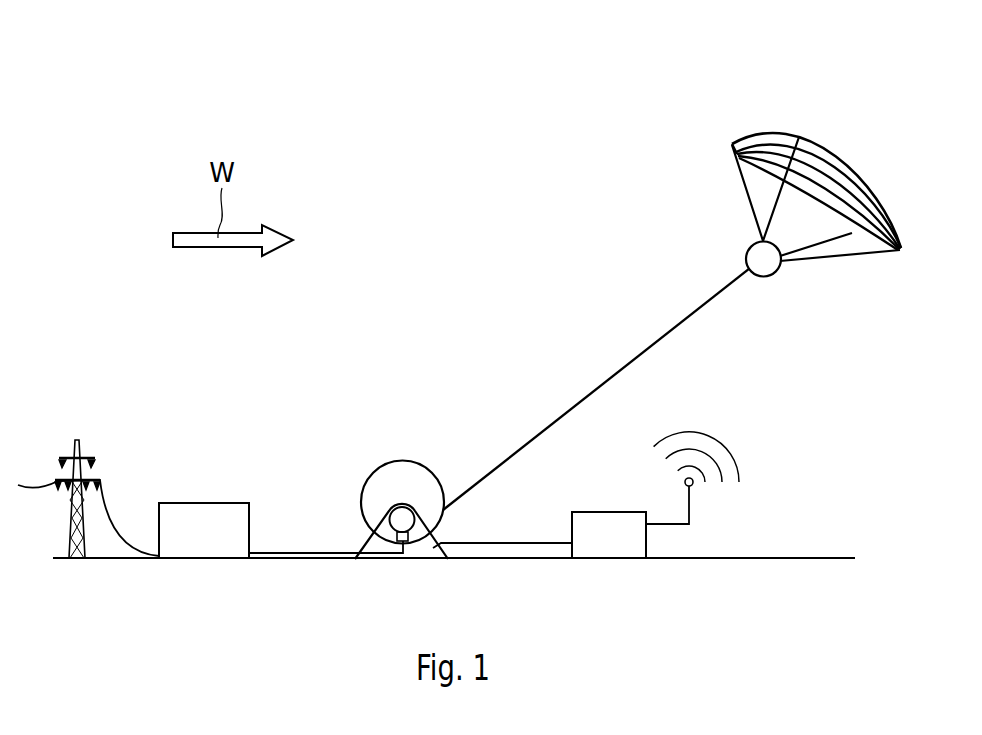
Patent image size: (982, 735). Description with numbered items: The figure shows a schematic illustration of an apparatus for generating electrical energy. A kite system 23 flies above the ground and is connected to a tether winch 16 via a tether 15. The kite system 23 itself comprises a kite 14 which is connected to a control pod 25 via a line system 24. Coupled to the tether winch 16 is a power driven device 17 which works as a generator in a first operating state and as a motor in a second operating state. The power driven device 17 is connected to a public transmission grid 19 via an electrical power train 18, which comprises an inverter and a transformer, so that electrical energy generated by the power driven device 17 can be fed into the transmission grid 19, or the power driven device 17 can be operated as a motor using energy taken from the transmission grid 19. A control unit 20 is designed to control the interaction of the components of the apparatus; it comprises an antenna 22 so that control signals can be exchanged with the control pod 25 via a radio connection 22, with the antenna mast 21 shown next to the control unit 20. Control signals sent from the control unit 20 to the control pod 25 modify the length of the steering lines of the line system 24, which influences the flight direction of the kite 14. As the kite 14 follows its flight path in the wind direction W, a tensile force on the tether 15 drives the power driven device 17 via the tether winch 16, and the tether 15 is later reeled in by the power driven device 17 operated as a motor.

The kite 14 is at (850, 170).
The tether 15 is at (595, 390).
The tether winch 16 is at (402, 472).
The power driven device 17 is at (403, 520).
The electrical power train 18 is at (202, 502).
The public transmission grid 19 is at (88, 453).
The control unit 20 is at (608, 512).
The antenna 21 is at (692, 503).
The antenna 22 is at (732, 458).
The kite system 23 is at (800, 114).
The line system 24 is at (748, 198).
The control pod 25 is at (770, 274).